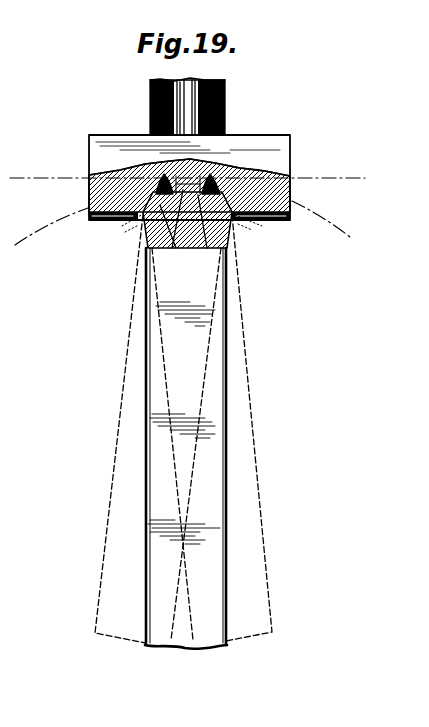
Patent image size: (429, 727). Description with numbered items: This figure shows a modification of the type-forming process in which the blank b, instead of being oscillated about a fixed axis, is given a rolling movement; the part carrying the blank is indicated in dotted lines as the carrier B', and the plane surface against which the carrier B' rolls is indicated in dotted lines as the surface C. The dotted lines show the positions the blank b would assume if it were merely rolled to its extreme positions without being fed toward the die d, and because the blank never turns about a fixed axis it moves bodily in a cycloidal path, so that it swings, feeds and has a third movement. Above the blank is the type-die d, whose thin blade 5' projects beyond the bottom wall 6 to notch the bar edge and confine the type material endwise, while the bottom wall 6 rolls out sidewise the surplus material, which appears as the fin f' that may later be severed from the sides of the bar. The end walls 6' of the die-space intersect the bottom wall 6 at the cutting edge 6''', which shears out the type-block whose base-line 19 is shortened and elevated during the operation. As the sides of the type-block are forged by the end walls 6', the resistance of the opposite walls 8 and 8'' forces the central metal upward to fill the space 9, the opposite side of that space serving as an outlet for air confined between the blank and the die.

The type-die d is at (252, 142).
The bottom wall of die 6 is at (172, 185).
The end walls of die-space 6' is at (194, 166).
The cutter body left portion 6''' is at (102, 171).
The base-line of type-block 19 is at (203, 250).
The wall of die-space 8 is at (207, 171).
The flame shaped recess 8'' is at (170, 172).
The space 9 is at (175, 207).
The die-blade 5' is at (177, 227).
The fin f' is at (186, 235).
The plane surface C is at (187, 170).
The carrier B' is at (189, 223).
The blank b is at (183, 432).